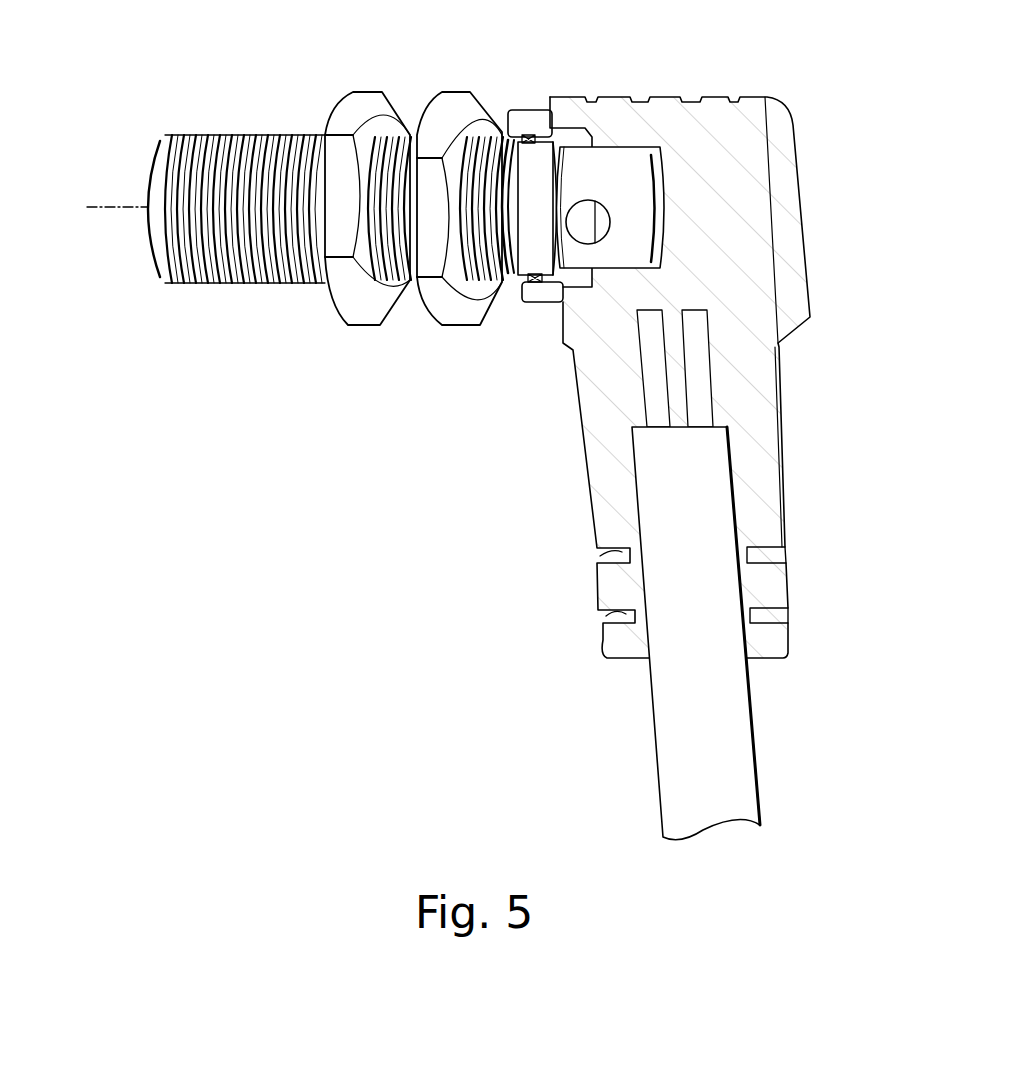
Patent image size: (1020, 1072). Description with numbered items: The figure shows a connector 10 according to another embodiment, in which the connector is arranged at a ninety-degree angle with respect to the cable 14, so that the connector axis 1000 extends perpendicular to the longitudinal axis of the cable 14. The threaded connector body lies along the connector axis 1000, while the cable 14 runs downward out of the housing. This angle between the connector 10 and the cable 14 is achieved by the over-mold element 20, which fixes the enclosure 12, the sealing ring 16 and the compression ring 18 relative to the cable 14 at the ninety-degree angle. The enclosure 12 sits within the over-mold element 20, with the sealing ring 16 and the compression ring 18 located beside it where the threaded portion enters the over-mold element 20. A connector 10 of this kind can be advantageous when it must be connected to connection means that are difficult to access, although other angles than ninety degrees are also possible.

The connector 10 is at (474, 420).
The enclosure 12 is at (627, 150).
The cable 14 is at (732, 730).
The sealing ring 16 is at (530, 132).
The compression ring 18 is at (542, 118).
The over-mold element 20 is at (765, 245).
The connector axis 1000 is at (103, 207).